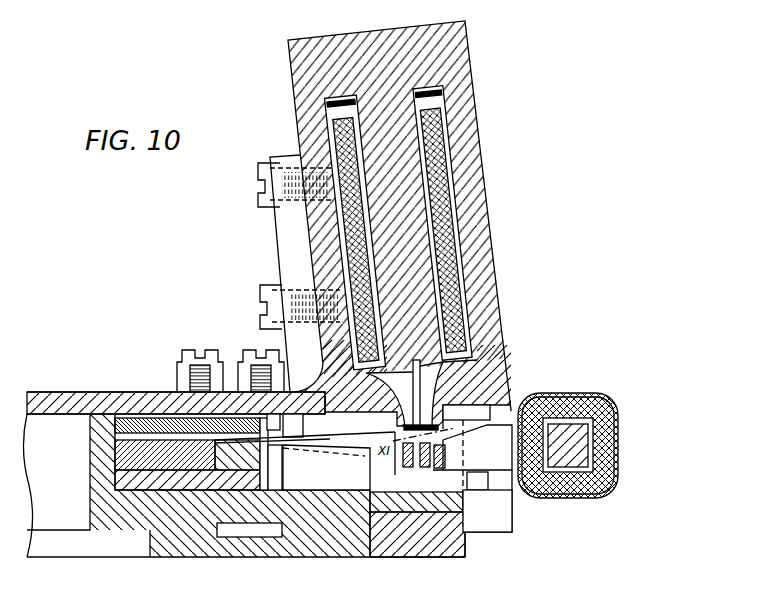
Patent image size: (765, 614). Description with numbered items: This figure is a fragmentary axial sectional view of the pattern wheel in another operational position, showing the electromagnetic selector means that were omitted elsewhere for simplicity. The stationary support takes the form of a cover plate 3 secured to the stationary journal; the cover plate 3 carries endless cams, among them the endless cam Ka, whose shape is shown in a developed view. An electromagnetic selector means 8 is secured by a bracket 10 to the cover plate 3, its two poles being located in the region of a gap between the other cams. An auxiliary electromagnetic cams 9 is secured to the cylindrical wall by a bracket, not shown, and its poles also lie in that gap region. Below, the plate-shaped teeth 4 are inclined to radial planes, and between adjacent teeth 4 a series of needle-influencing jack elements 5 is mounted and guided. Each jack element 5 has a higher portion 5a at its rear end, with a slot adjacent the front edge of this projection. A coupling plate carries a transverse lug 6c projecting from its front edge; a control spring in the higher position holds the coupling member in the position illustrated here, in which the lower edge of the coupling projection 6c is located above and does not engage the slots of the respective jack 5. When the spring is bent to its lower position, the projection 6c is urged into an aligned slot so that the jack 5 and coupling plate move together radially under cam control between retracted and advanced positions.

The cover plate 3 is at (60, 392).
The electromagnetic selector means 8 is at (460, 133).
The bracket 10 is at (288, 245).
The endless cam Ka is at (372, 431).
The teeth 4 is at (463, 422).
The needle-influencing jack element 5 is at (448, 477).
The higher portion 5a is at (372, 455).
The transverse lug 6c is at (460, 497).
The auxiliary electromagnetic cams 9 is at (553, 497).